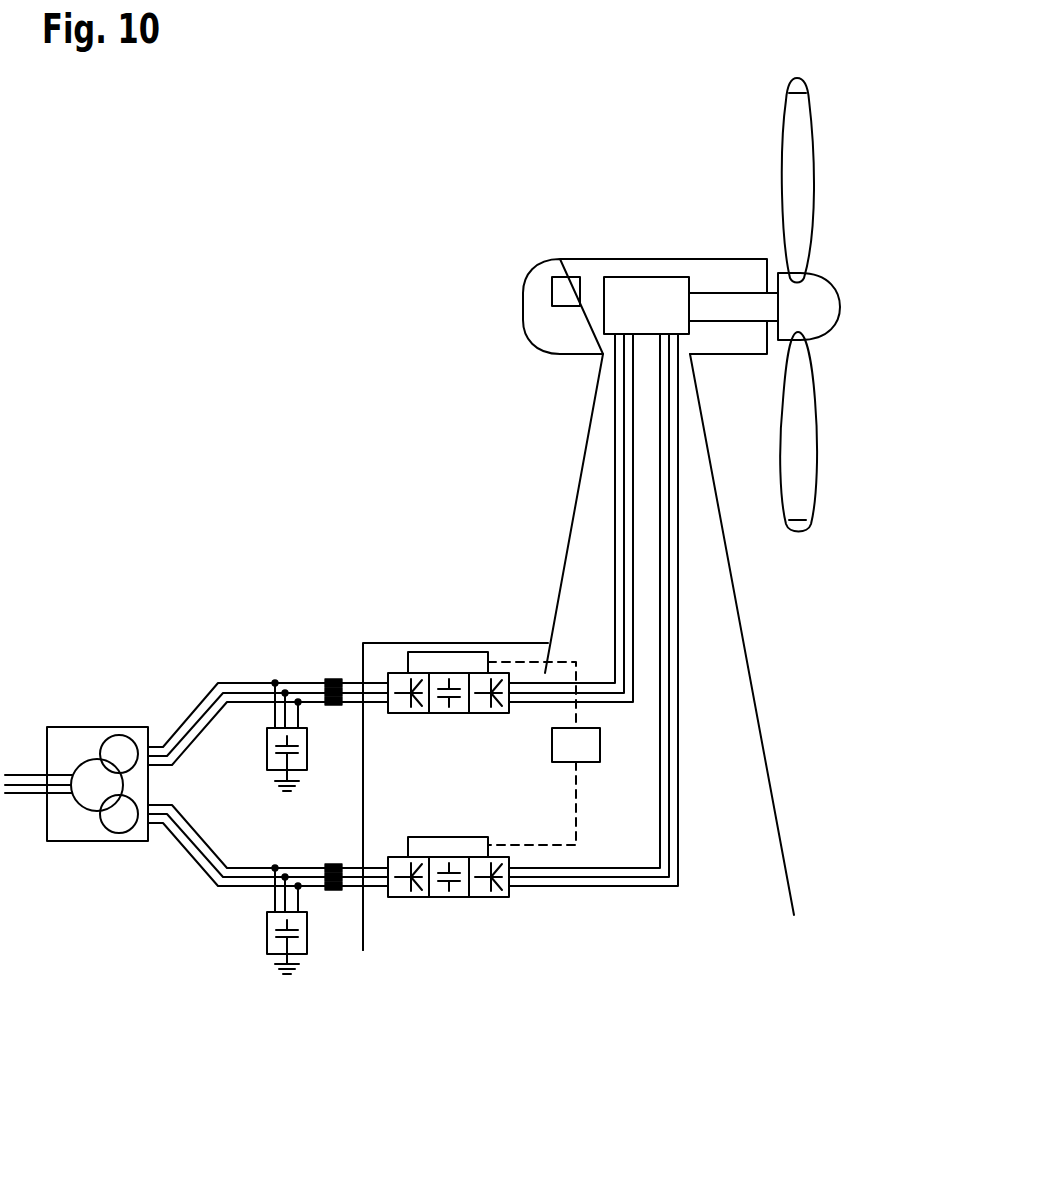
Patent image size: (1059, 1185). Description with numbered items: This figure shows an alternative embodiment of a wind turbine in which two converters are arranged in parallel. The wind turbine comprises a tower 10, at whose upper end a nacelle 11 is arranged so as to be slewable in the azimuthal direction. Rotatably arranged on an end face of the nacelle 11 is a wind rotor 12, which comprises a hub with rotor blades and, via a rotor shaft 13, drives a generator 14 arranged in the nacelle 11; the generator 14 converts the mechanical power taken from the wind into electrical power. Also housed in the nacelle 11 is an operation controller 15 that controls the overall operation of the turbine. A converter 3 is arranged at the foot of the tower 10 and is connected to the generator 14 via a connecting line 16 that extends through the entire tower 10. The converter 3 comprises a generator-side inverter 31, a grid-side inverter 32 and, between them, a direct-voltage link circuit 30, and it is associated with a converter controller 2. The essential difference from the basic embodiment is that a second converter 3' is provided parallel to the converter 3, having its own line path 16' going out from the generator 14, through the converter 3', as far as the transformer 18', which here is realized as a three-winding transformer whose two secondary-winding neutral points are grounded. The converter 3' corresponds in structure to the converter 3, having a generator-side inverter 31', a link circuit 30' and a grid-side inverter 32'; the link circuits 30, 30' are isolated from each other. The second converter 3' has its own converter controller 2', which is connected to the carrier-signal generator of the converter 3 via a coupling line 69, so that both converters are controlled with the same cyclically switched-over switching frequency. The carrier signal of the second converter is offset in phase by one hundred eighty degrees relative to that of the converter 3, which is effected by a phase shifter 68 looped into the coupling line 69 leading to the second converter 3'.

The tower 10 is at (743, 633).
The nacelle 11 is at (522, 308).
The wind rotor 12 is at (840, 310).
The rotor shaft 13 is at (725, 293).
The generator 14 is at (647, 277).
The operation controller 15 is at (566, 277).
The connecting line 16 is at (561, 518).
The line path 16' is at (675, 610).
The transformer 18' is at (196, 808).
The converter controller 2 is at (450, 681).
The converter controller 2' is at (464, 889).
The converter 3 is at (455, 760).
The second converter 3' is at (402, 948).
The direct-voltage link circuit 30 is at (449, 733).
The link circuit 30' is at (450, 916).
The generator-side inverter 31 is at (493, 736).
The generator-side inverter 31' is at (497, 919).
The grid-side inverter 32 is at (405, 736).
The grid-side inverter 32' is at (402, 919).
The phase shifter 68 is at (600, 743).
The coupling line 69 is at (576, 812).